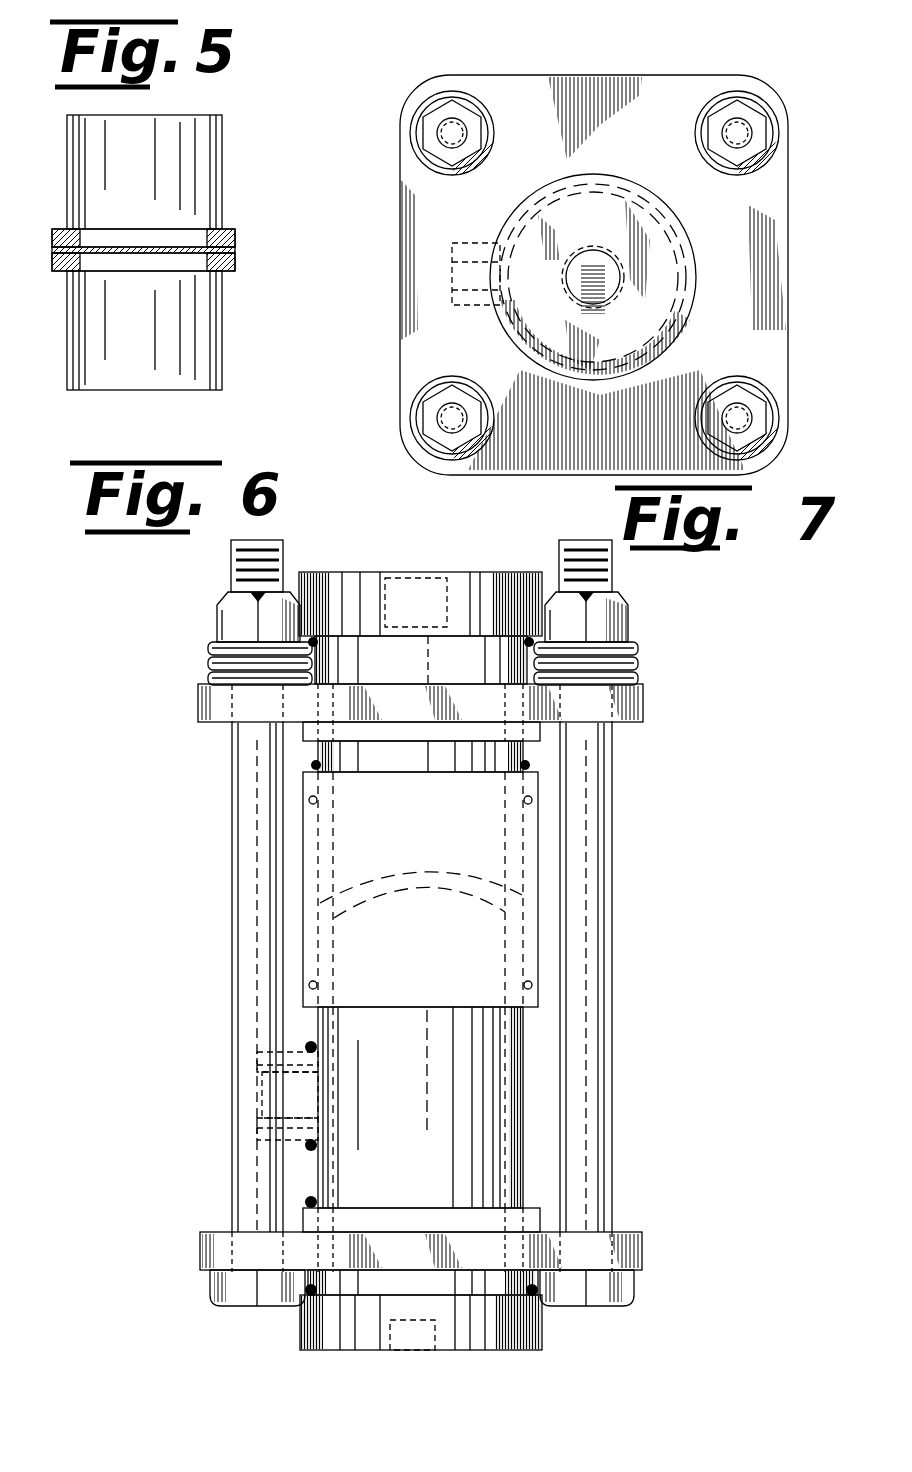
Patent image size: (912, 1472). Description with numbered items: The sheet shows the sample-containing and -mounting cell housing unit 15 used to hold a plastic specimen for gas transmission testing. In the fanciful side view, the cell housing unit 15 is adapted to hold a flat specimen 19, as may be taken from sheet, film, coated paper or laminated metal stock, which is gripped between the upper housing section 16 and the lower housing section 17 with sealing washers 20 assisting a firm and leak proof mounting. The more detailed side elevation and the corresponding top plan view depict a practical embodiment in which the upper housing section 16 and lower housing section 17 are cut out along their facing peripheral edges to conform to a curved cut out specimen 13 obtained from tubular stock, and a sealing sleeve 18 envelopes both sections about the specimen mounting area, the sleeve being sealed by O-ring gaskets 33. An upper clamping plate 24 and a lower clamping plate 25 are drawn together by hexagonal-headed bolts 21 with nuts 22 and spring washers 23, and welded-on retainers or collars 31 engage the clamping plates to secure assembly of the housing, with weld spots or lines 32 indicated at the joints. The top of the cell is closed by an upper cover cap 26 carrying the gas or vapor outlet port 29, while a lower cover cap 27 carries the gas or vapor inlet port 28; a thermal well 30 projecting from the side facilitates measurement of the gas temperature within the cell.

In FIG. 6, the cut out specimen 13 is at (430, 880).
In FIG. 5, the cell housing unit 15 is at (164, 282).
In FIG. 6, the cell housing unit 15 is at (380, 959).
In FIG. 5, the upper housing section 16 is at (222, 132).
In FIG. 6, the upper housing section 16 is at (526, 760).
In FIG. 5, the lower housing section 17 is at (222, 355).
In FIG. 6, the lower housing section 17 is at (492, 1065).
In FIG. 7, the sealing sleeve 18 is at (565, 250).
In FIG. 6, the sealing sleeve 18 is at (303, 905).
In FIG. 5, the flat specimen 19 is at (235, 250).
In FIG. 5, the sealing washers 20 is at (235, 238).
In FIG. 7, the bolt 21 is at (446, 135).
In FIG. 6, the bolt 21 is at (240, 765).
In FIG. 7, the nut 22 is at (462, 110).
In FIG. 6, the nut 22 is at (235, 614).
In FIG. 7, the spring washer 23 is at (425, 125).
In FIG. 6, the spring washer 23 is at (212, 660).
In FIG. 7, the upper clamping plate 24 is at (400, 200).
In FIG. 6, the upper clamping plate 24 is at (212, 702).
In FIG. 6, the lower clamping plate 25 is at (204, 1250).
In FIG. 7, the upper cover cap 26 is at (672, 218).
In FIG. 6, the upper cover cap 26 is at (322, 574).
In FIG. 6, the lower cover cap 27 is at (330, 1318).
In FIG. 6, the gas or vapor inlet port 28 is at (418, 1338).
In FIG. 7, the gas or vapor outlet port 29 is at (590, 248).
In FIG. 6, the gas or vapor outlet port 29 is at (428, 584).
In FIG. 7, the thermal well 30 is at (446, 272).
In FIG. 6, the thermal well 30 is at (252, 1096).
In FIG. 6, the welded-on retainers 31 is at (306, 735).
In FIG. 6, the weld spots 32 is at (318, 644).
In FIG. 6, the O-ring gaskets 33 is at (524, 800).